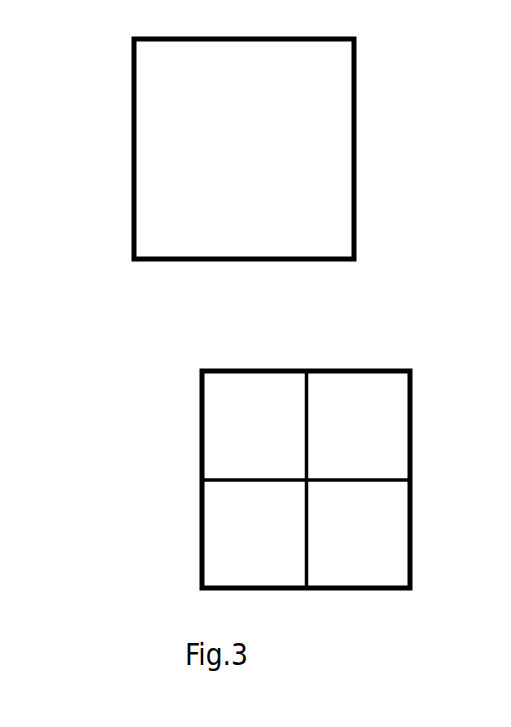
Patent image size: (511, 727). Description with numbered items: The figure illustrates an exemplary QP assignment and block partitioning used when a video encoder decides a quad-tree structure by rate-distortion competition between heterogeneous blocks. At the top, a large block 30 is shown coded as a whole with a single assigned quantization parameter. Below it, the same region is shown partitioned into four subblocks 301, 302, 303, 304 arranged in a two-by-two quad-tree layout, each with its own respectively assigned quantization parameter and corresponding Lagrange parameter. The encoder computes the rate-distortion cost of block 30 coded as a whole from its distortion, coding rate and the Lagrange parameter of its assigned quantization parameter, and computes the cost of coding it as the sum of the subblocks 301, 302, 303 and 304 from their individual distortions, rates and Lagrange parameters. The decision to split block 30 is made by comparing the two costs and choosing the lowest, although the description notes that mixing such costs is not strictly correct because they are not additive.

The large block 30 is at (145, 153).
The subblock 301 is at (214, 417).
The subblock 302 is at (360, 385).
The subblock 303 is at (214, 533).
The subblock 304 is at (400, 522).